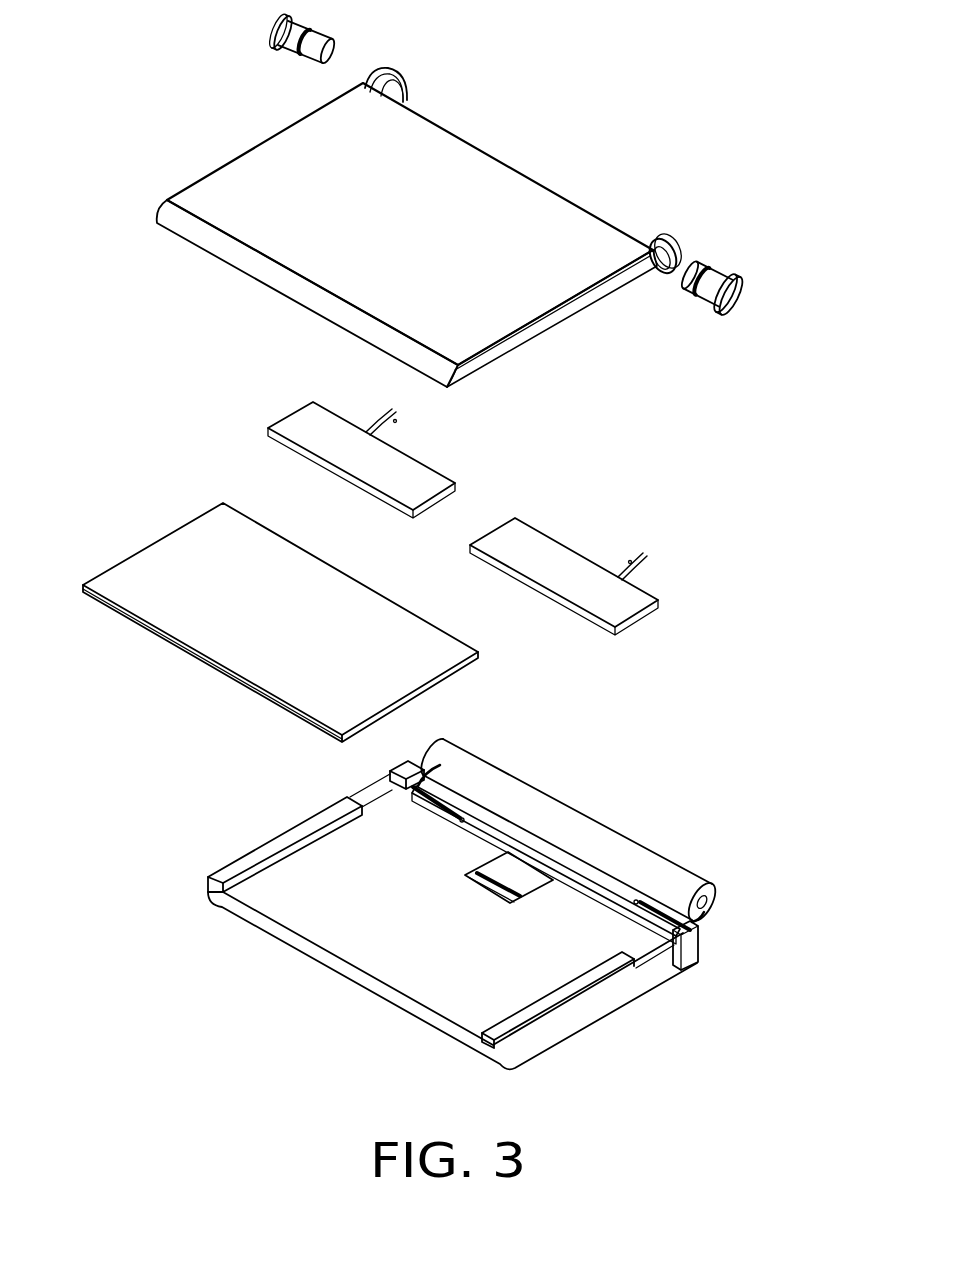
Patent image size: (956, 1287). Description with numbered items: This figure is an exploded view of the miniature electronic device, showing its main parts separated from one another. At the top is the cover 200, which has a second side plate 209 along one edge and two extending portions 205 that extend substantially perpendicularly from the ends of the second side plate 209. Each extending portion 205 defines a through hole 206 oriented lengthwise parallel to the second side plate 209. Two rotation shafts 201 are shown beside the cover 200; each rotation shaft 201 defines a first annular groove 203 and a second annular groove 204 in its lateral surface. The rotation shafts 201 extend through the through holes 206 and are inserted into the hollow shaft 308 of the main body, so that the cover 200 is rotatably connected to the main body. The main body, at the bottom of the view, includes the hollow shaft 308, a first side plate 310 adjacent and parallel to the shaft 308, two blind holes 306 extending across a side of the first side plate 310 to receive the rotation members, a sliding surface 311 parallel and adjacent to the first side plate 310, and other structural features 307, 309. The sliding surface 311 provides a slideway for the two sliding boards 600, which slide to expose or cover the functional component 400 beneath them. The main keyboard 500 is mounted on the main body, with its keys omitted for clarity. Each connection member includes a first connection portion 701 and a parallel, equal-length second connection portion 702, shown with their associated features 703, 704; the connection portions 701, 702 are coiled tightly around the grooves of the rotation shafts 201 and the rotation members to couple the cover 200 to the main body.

The cover 200 is at (490, 195).
The rotation shaft 201 is at (290, 22).
The first annular groove 203 is at (703, 260).
The second annular groove 204 is at (718, 273).
The extending portion 205 is at (380, 78).
The through hole 206 is at (396, 90).
The second side plate 209 is at (580, 207).
The blind hole 306 is at (490, 810).
The support rail 307 is at (630, 900).
The hollow shaft 308 is at (694, 888).
The corner block 309 is at (700, 933).
The first side plate 310 is at (405, 748).
The sliding surface 311 is at (655, 940).
The functional component 400 is at (540, 850).
The main keyboard 500 is at (188, 560).
The sliding board 600 is at (297, 422).
The first connection portion 701 is at (378, 422).
The second connection portion 702 is at (395, 420).
The second connector wire 703 is at (637, 567).
The second connector 704 is at (630, 563).